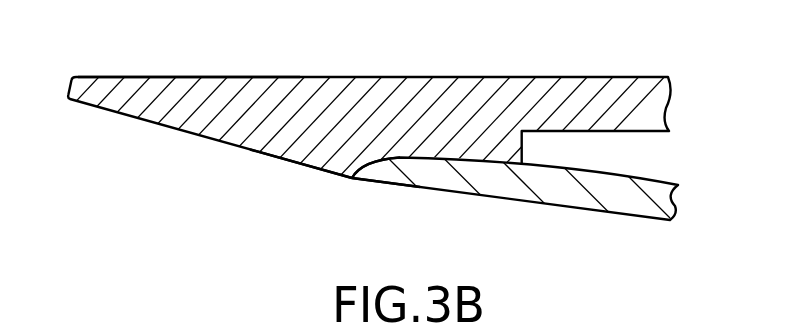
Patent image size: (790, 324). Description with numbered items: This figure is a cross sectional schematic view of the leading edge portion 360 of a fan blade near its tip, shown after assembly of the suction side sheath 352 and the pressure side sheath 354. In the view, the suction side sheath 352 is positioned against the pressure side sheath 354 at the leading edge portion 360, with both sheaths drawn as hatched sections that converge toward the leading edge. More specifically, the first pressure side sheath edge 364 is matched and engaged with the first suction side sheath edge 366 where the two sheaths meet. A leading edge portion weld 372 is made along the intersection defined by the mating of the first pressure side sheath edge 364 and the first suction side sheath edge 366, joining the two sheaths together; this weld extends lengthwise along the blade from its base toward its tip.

The suction side sheath 352 is at (645, 206).
The pressure side sheath 354 is at (448, 88).
The leading edge portion 360 is at (160, 93).
The first pressure side sheath edge 364 is at (353, 178).
The first suction side sheath edge 366 is at (368, 183).
The leading edge portion weld 372 is at (353, 182).